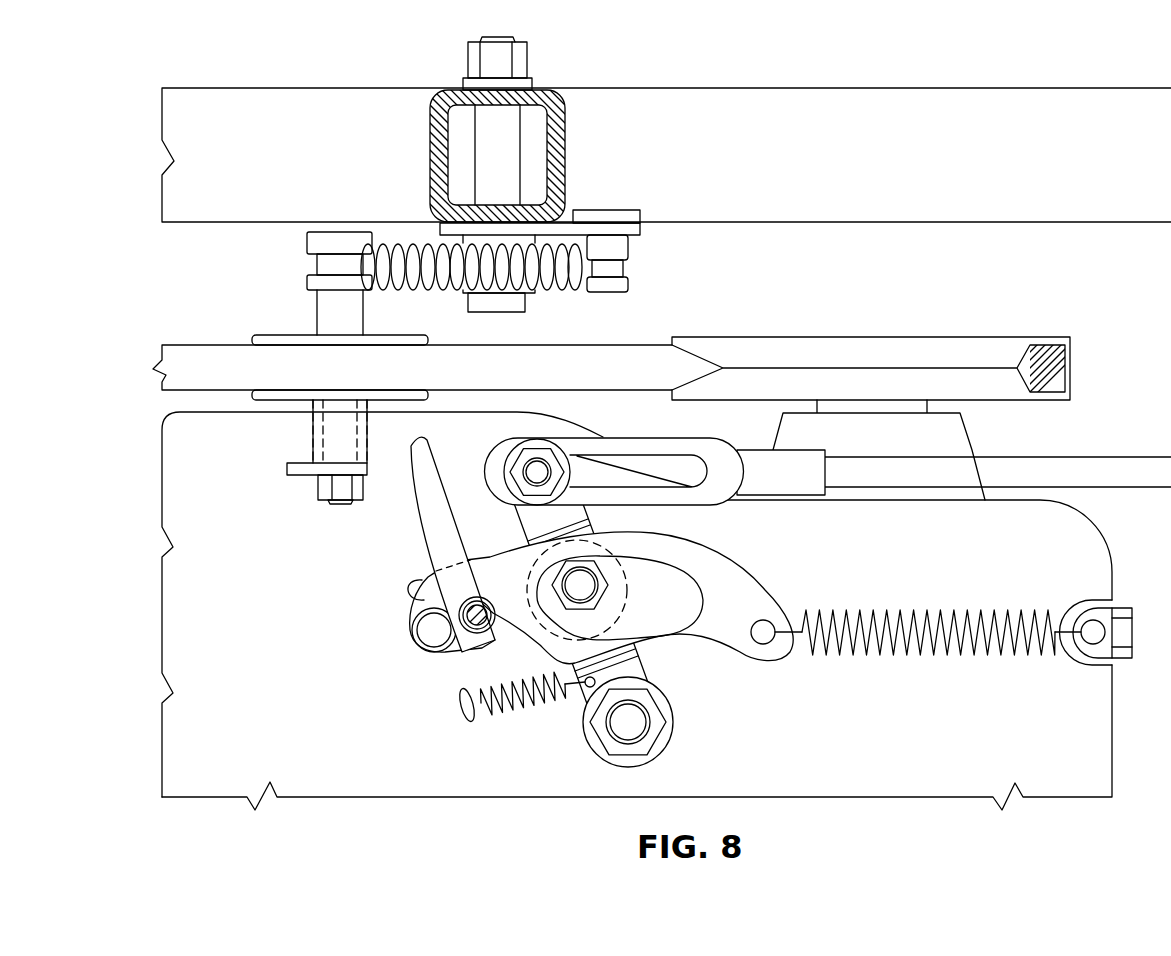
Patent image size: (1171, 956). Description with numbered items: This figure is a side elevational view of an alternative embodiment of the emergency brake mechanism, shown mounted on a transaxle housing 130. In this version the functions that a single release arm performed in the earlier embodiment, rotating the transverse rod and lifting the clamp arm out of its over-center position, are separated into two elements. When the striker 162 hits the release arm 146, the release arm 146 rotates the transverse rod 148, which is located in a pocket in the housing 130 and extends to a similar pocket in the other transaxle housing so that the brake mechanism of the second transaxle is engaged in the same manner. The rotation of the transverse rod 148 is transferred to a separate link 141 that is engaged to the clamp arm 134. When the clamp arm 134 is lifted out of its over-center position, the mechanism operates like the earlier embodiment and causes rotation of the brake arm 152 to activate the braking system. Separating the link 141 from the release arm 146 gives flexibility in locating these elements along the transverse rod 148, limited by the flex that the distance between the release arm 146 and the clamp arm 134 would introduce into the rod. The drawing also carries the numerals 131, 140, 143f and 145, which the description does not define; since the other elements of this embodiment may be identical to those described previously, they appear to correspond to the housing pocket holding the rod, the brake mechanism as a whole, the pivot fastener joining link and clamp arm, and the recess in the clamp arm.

The housing 130 is at (970, 568).
The stop tab 131 is at (410, 588).
The clamp arm 134 is at (747, 612).
The latch mechanism 140 is at (544, 602).
The link 141 is at (413, 607).
The pivot pin 143f is at (437, 630).
The bushing 145 is at (463, 645).
The release arm 146 is at (423, 526).
The transverse rod 148 is at (486, 637).
The brake arm 152 is at (647, 665).
The striker 162 is at (287, 468).